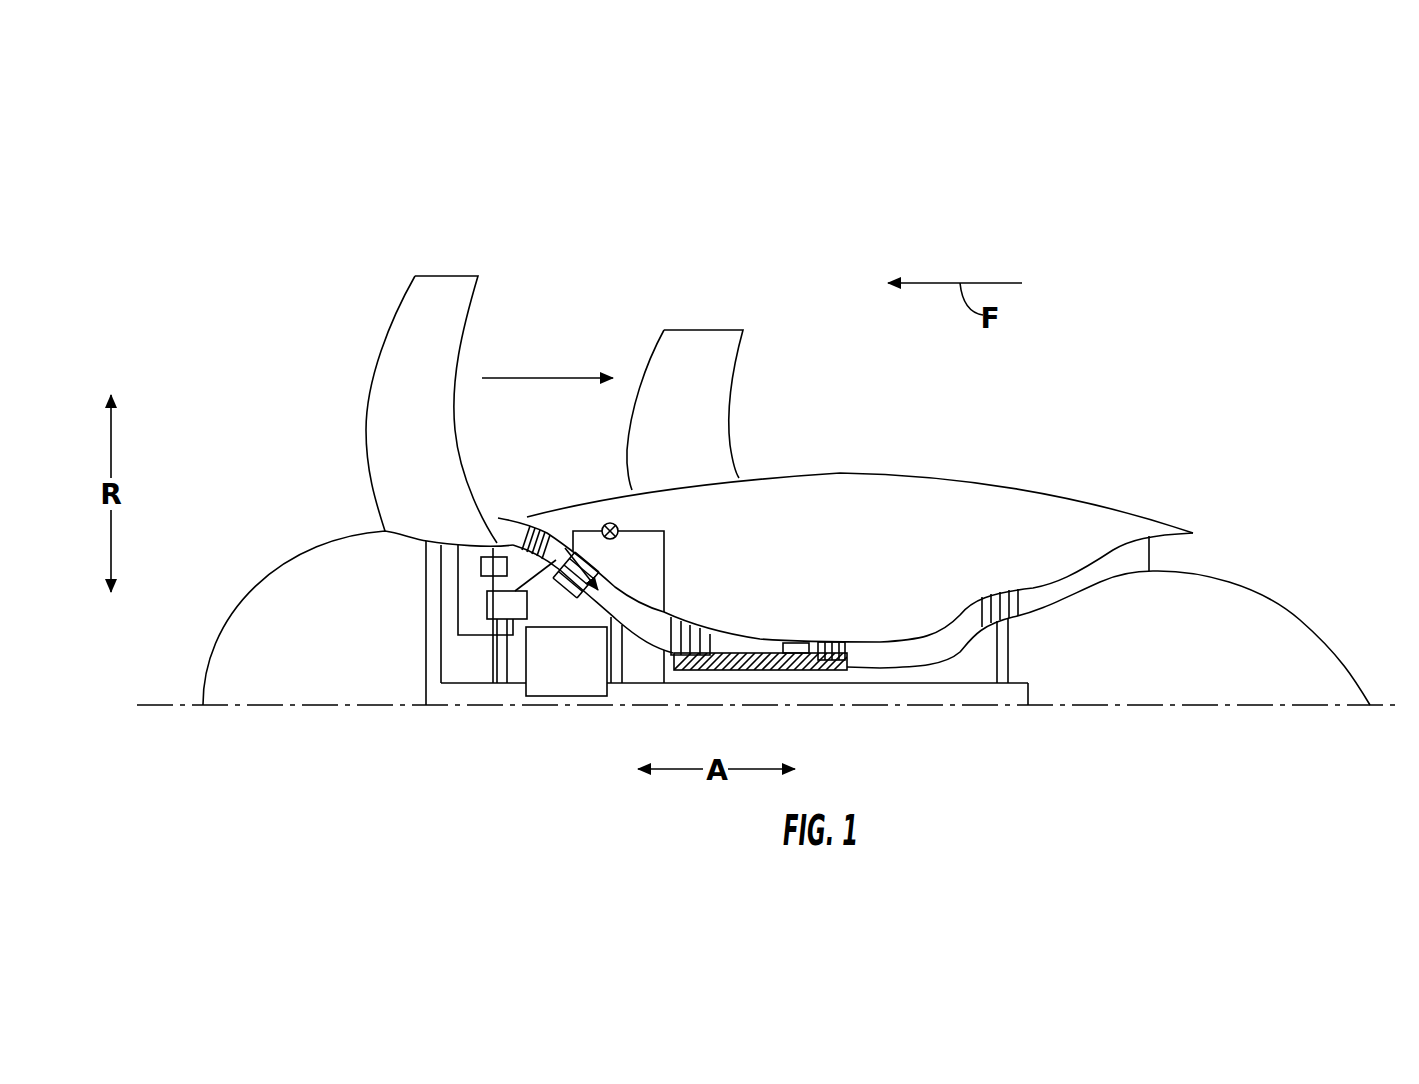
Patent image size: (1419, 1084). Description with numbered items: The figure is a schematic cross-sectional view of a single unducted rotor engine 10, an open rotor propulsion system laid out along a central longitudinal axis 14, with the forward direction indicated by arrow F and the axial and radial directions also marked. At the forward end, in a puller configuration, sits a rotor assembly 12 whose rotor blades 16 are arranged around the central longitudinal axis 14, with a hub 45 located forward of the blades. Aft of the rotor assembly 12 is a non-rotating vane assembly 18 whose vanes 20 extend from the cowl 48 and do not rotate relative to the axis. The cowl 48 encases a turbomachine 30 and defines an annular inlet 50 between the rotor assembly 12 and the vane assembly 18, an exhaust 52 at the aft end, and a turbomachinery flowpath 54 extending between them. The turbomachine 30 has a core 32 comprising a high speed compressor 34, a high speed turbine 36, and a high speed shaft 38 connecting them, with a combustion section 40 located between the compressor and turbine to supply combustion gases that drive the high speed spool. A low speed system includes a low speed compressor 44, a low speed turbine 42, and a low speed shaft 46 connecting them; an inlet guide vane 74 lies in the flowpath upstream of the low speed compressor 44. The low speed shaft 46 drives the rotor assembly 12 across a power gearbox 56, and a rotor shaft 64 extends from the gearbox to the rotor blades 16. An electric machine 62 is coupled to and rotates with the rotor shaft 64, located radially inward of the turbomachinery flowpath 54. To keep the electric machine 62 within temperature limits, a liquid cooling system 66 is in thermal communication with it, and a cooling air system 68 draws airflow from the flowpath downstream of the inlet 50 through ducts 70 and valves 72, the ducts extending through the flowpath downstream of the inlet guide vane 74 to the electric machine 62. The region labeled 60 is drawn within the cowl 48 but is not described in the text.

The single unducted rotor engine 10 is at (205, 238).
The rotor assembly 12 is at (272, 437).
The central longitudinal axis 14 is at (167, 705).
The rotor blades 16 is at (440, 285).
The vane assembly 18 is at (669, 366).
The vanes 20 is at (688, 345).
The turbomachine 30 is at (860, 464).
The core 32 is at (841, 599).
The high speed compressor 34 is at (700, 618).
The high speed turbine 36 is at (843, 633).
The high speed shaft 38 is at (722, 668).
The combustion section 40 is at (795, 645).
The low speed turbine 42 is at (1010, 585).
The low speed compressor 44 is at (580, 583).
The hub 45 is at (220, 610).
The low speed shaft 46 is at (932, 690).
The cowl 48 is at (993, 480).
The inlet 50 is at (515, 513).
The exhaust 52 is at (1185, 546).
The turbomachinery flowpath 54 is at (920, 648).
The power gearbox 56 is at (560, 687).
The core compartment 60 is at (753, 520).
The electric machine 62 is at (487, 603).
The rotor shaft 64 is at (458, 690).
The liquid cooling system 66 is at (481, 567).
The cooling air system 68 is at (647, 503).
The ducts 70 is at (655, 531).
The valves 72 is at (608, 523).
The inlet guide vane 74 is at (543, 520).